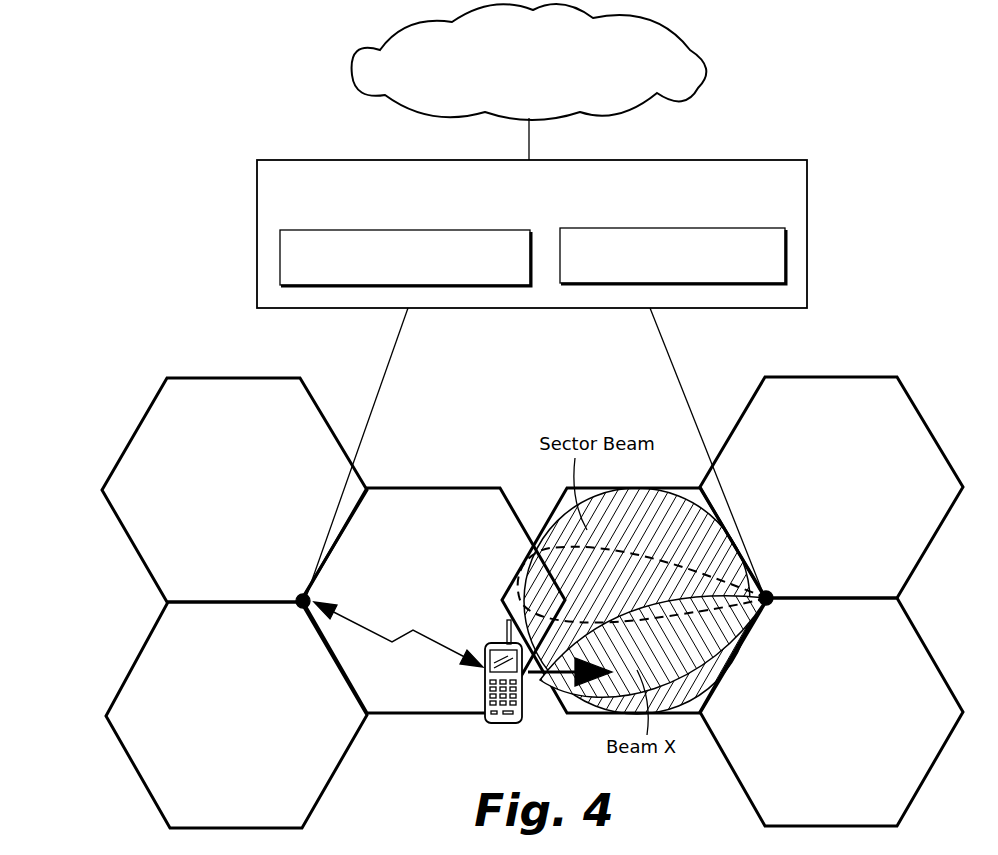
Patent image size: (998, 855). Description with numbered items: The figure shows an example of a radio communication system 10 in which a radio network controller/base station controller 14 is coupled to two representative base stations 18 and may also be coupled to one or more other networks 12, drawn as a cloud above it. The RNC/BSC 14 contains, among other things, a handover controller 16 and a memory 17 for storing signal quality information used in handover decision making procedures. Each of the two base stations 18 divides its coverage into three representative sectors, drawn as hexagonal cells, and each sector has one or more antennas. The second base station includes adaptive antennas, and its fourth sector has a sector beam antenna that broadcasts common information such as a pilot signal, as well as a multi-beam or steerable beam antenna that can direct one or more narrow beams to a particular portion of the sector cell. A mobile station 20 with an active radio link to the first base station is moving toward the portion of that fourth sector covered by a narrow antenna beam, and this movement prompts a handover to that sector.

The radio communication system 10 is at (157, 82).
The other networks 12 is at (375, 70).
The radio network controller/base station controller 14 is at (680, 160).
The handover controller 16 is at (338, 230).
The memory 17 is at (722, 228).
The base stations 18 is at (536, 628).
The mobile station 20 is at (499, 724).